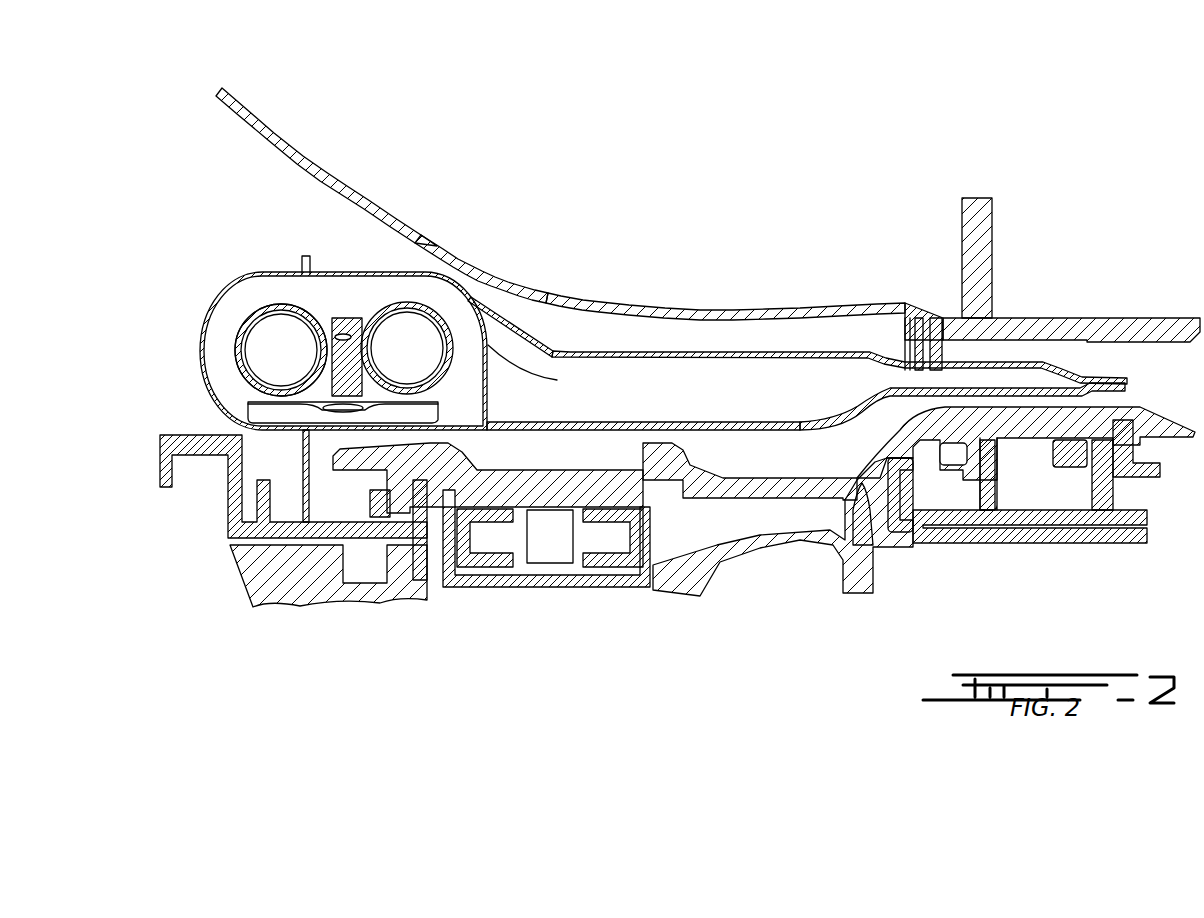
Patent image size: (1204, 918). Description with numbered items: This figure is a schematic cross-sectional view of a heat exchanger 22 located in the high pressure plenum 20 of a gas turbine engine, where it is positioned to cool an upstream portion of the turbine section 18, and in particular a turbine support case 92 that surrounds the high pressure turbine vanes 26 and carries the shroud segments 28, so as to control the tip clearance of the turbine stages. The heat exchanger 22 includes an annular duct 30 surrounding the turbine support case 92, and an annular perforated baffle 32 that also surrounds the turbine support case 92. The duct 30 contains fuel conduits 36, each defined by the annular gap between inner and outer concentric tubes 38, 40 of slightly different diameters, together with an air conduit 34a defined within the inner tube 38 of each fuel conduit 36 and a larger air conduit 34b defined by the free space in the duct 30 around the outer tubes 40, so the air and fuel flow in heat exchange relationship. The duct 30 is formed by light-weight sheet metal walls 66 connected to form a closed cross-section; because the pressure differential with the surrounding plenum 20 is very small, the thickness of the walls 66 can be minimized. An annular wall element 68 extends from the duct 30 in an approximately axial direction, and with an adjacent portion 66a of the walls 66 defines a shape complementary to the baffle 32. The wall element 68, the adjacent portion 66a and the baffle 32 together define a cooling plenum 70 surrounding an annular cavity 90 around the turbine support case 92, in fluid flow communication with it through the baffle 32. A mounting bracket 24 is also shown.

The turbine section 18 is at (621, 645).
The high pressure plenum 20 is at (247, 166).
The heat exchanger 22 is at (446, 268).
The mounting bracket 24 is at (1005, 360).
The high pressure turbine vanes 26 is at (324, 590).
The shroud segments 28 is at (484, 580).
The annular duct 30 is at (483, 318).
The annular perforated baffle 32 is at (830, 410).
The air conduit 34a is at (280, 360).
The air conduit 34b is at (242, 300).
The fuel conduit 36 is at (400, 316).
The inner tube 38 is at (245, 350).
The outer tube 40 is at (238, 330).
The wall 66 is at (343, 272).
The adjacent portion of the wall 66a is at (541, 370).
The annular wall element 68 is at (650, 350).
The cooling plenum 70 is at (690, 390).
The annular cavity 90 is at (785, 457).
The turbine support case 92 is at (1077, 418).